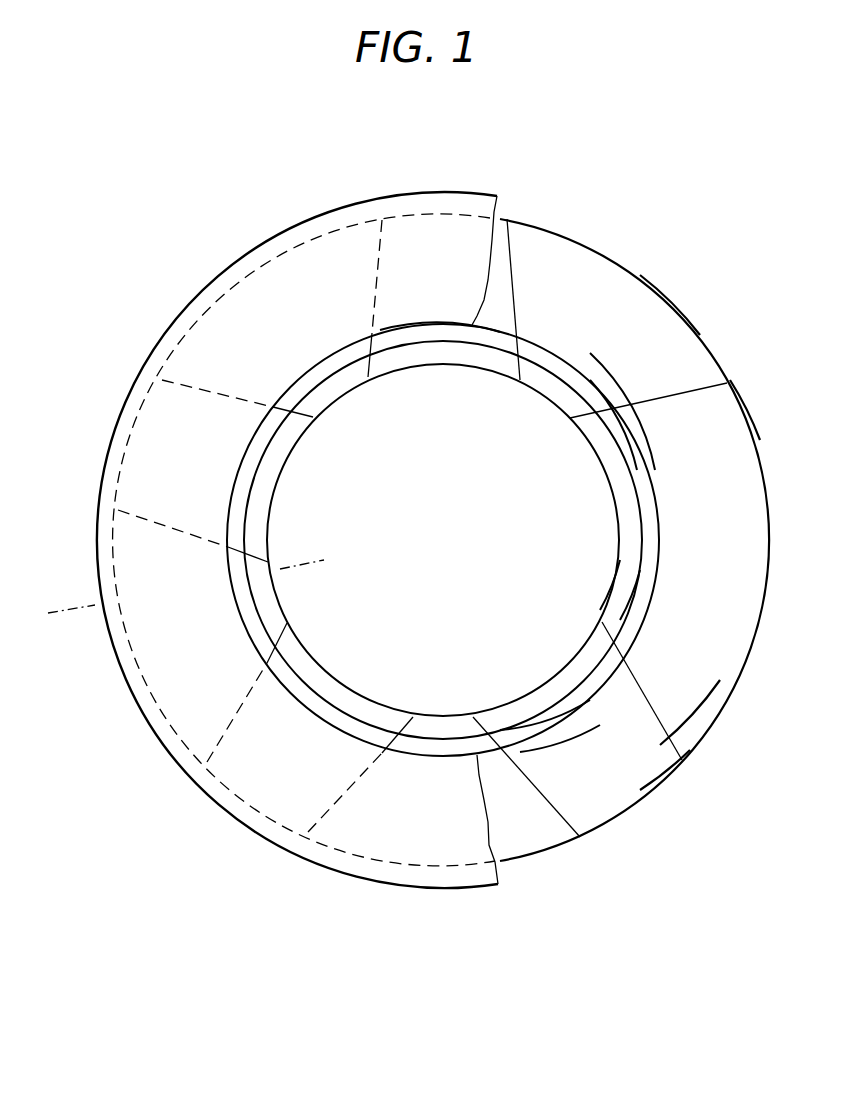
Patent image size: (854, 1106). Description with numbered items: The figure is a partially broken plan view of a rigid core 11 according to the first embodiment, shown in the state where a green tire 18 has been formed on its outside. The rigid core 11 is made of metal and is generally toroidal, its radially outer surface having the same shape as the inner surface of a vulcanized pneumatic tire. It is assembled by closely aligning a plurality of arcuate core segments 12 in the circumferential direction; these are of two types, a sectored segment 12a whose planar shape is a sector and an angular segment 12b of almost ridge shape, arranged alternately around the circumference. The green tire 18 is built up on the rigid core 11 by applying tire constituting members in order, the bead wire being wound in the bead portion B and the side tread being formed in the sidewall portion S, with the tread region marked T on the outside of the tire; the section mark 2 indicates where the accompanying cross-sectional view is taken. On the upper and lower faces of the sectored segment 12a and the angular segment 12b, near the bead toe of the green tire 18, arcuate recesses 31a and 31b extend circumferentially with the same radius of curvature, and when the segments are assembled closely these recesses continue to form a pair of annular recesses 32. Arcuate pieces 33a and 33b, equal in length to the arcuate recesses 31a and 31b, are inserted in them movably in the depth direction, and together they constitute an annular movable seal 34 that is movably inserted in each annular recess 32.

The rigid core 11 is at (622, 256).
The core segment 12 is at (562, 262).
The sectored segment 12a is at (663, 330).
The angular segment 12b is at (735, 412).
The green tire 18 is at (452, 185).
The tread T is at (251, 247).
The sidewall portion S is at (322, 273).
The bead portion B is at (428, 313).
The arcuate recess 31a is at (540, 350).
The arcuate recess 31b is at (640, 455).
The annular recess 32 is at (646, 599).
The arcuate piece 33a is at (582, 378).
The arcuate piece 33b is at (627, 435).
The annular movable seal 34 is at (637, 497).
The section line for FIG. 2 is at (61, 603).